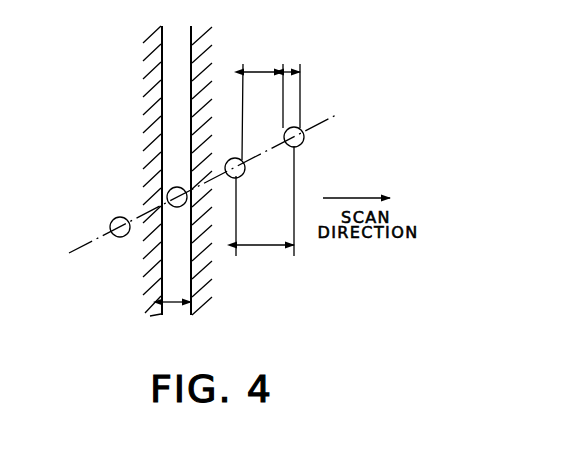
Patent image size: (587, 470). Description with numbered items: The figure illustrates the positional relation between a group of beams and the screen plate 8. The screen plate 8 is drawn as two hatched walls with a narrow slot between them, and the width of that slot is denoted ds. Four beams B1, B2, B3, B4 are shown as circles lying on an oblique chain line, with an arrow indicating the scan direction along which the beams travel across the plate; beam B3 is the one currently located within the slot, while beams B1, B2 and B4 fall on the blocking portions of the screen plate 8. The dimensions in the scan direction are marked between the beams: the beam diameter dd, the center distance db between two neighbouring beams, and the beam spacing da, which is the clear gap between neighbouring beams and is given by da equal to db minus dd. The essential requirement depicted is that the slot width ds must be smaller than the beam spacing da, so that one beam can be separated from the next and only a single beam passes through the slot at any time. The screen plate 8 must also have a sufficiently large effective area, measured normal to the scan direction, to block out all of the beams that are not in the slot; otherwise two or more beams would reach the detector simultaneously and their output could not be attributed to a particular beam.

The screen plate 8 is at (117, 48).
The beam B1 is at (307, 145).
The beam B2 is at (248, 175).
The beam B3 is at (175, 208).
The beam B4 is at (117, 241).
The beam spacing da is at (264, 71).
The beam diameter dd is at (291, 68).
The center distance between neighbouring beams db is at (266, 247).
The slot width ds is at (176, 305).